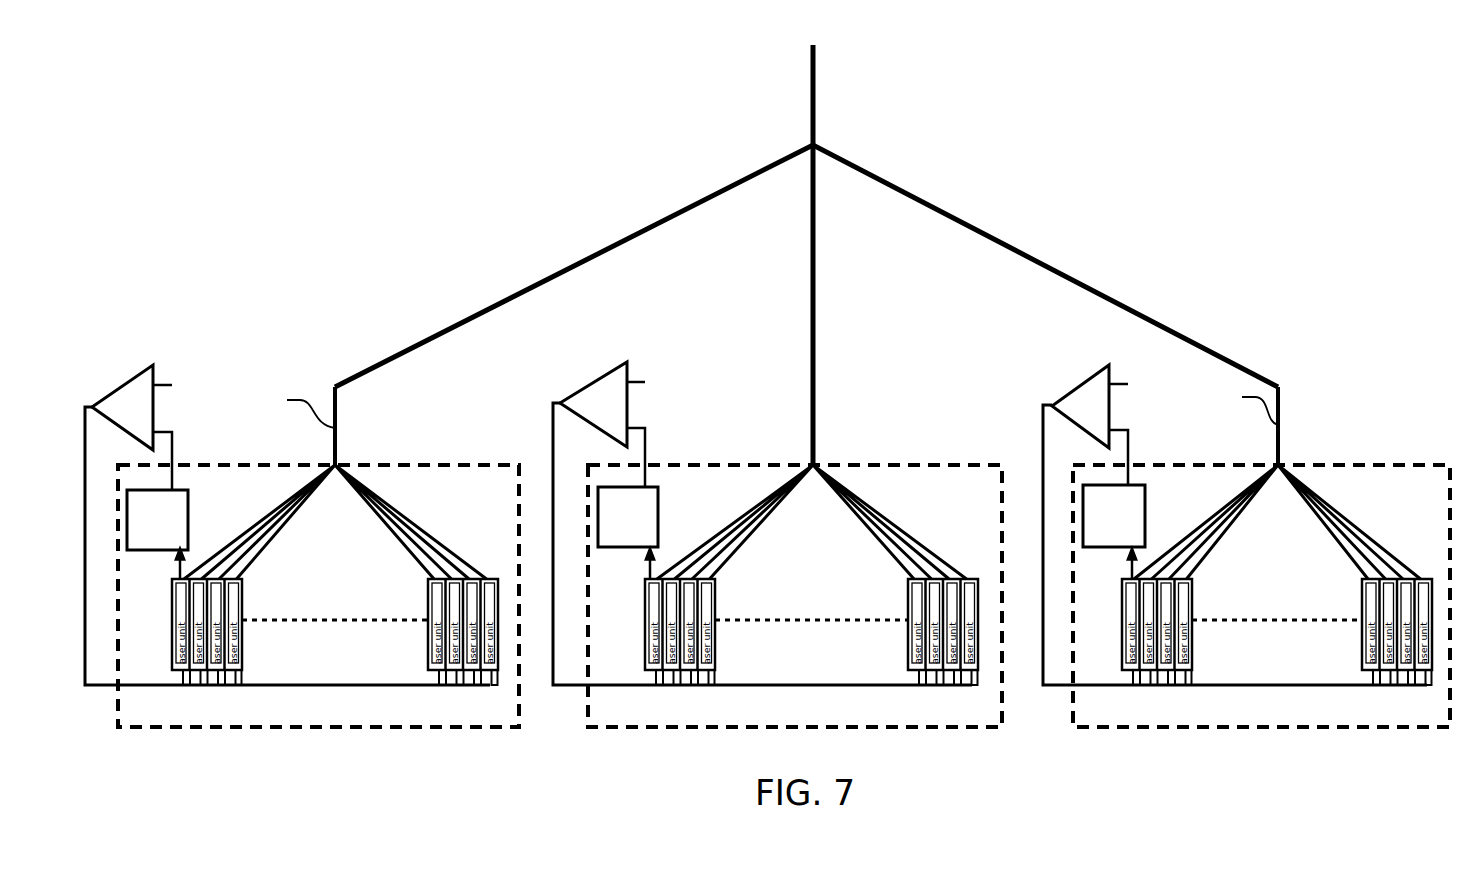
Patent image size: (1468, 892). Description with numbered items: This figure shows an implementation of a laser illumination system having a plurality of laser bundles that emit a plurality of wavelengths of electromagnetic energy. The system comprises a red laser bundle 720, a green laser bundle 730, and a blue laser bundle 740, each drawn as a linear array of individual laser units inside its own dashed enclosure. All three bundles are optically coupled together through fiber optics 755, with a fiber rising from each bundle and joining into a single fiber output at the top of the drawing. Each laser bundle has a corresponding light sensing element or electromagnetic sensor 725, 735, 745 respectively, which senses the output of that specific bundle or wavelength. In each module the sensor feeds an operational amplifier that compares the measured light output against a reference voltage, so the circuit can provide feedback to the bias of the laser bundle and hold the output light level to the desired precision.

The red laser bundle 720 is at (302, 546).
The green laser bundle 730 is at (777, 544).
The blue laser bundle 740 is at (1246, 546).
The electromagnetic sensor 725 is at (188, 526).
The electromagnetic sensor 735 is at (658, 523).
The electromagnetic sensor 745 is at (1145, 513).
The fiber optics 755 is at (813, 92).